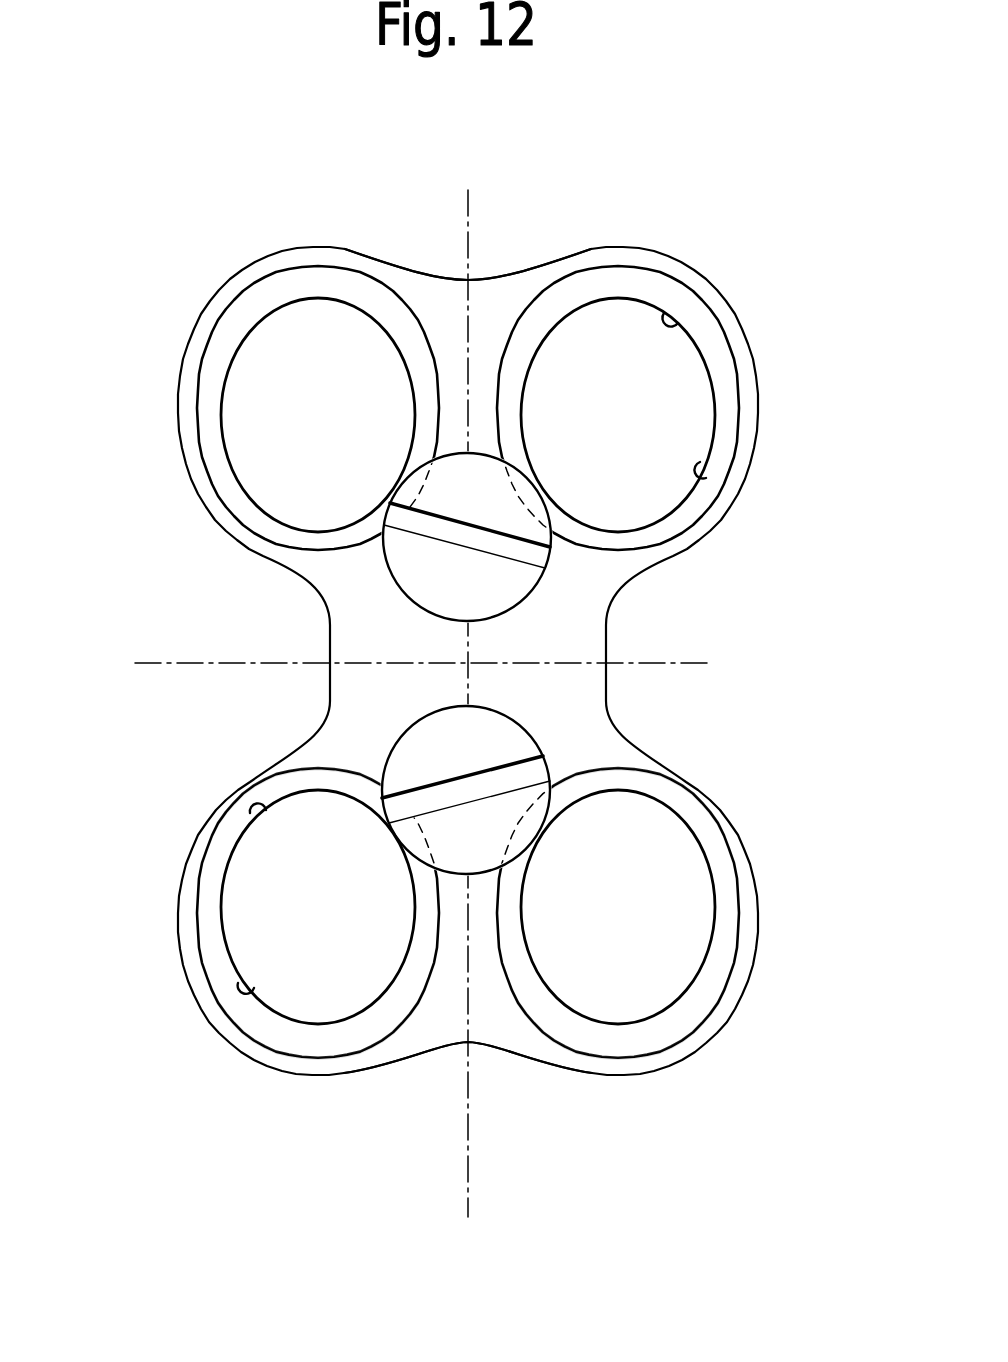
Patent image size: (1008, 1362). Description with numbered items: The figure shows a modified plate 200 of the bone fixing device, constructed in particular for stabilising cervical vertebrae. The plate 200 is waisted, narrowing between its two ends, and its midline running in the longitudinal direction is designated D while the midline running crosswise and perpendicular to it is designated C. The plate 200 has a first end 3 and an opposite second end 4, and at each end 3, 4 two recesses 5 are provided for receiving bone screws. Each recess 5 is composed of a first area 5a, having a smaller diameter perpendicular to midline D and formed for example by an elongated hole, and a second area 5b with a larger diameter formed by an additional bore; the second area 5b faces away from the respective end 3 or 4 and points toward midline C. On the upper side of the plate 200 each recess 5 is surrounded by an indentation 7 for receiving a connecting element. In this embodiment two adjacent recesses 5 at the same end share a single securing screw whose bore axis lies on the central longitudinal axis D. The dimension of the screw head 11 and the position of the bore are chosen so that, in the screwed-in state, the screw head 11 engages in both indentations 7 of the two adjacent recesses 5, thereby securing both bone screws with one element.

The first end 3 is at (453, 278).
The second end 4 is at (437, 1044).
The recess 5 is at (257, 420).
The first area 5a is at (680, 327).
The second area 5b is at (703, 463).
The indentation 7 is at (227, 330).
The screw head 11 is at (405, 553).
The plate 200 is at (632, 631).
The midline in crosswise direction C is at (140, 662).
The midline in longitudinal direction D is at (466, 1190).